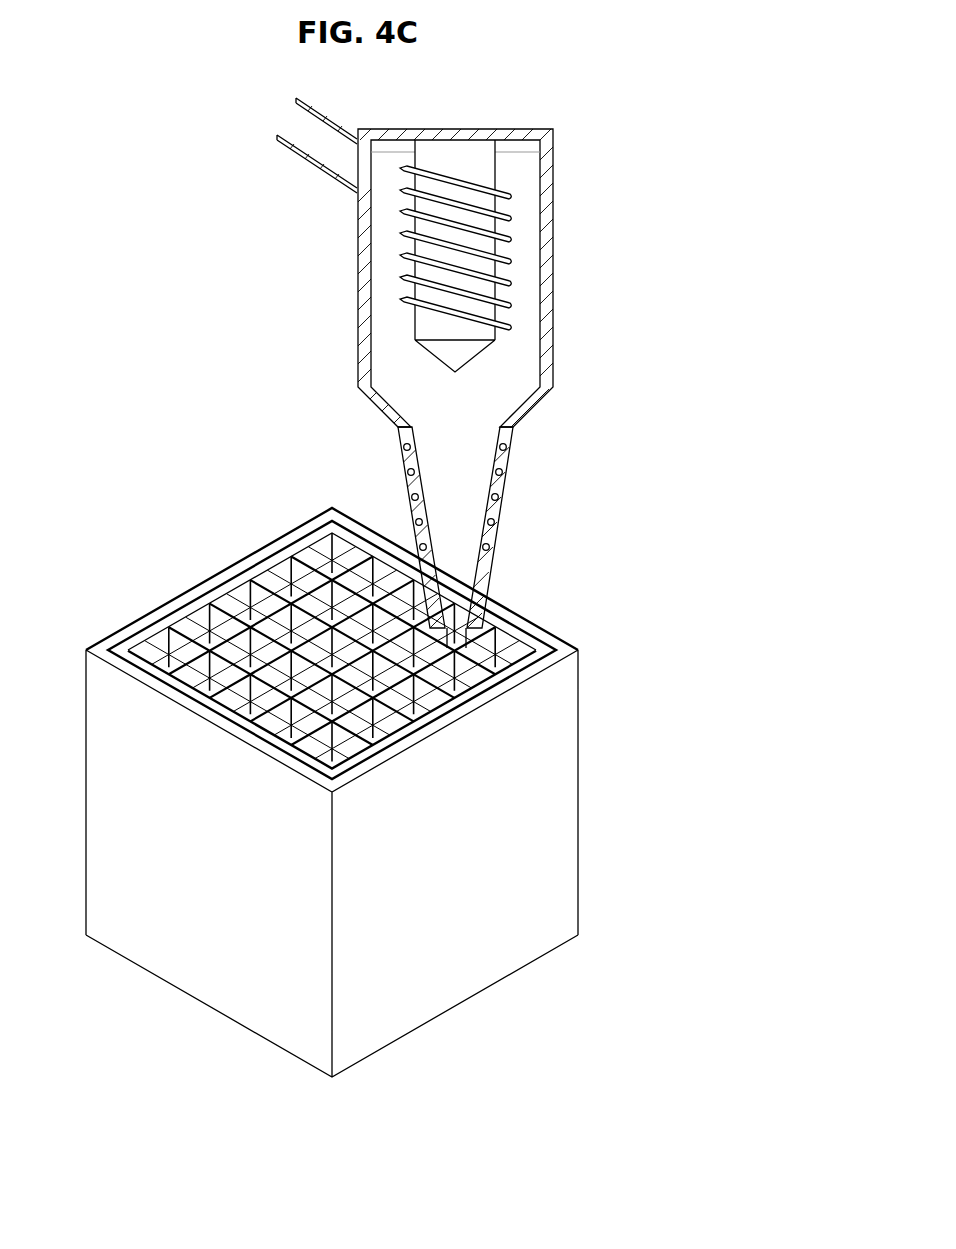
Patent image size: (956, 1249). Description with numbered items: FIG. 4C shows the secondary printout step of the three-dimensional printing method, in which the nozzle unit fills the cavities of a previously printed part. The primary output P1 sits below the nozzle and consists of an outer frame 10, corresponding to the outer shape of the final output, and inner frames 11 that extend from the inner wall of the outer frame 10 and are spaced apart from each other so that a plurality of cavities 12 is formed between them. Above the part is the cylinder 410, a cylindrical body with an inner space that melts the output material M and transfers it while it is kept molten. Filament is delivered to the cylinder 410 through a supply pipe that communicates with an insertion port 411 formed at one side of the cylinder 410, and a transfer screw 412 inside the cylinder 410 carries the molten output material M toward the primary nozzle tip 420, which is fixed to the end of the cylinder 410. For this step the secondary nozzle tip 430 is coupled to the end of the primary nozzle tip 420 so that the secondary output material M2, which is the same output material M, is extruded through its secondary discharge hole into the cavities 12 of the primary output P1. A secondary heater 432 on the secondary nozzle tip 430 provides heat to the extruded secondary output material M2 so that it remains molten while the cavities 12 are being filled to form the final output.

The outer frame 10 is at (135, 628).
The inner frames 11 is at (323, 597).
The cavity 12 is at (190, 642).
The cylinder 410 is at (545, 280).
The insertion port 411 is at (313, 144).
The transfer screw 412 is at (497, 165).
The primary nozzle tip 420 is at (380, 400).
The secondary nozzle tip 430 is at (487, 555).
The secondary heater 432 is at (495, 497).
The output material M is at (376, 262).
The secondary output material M2 is at (460, 592).
The primary output P1 is at (166, 993).